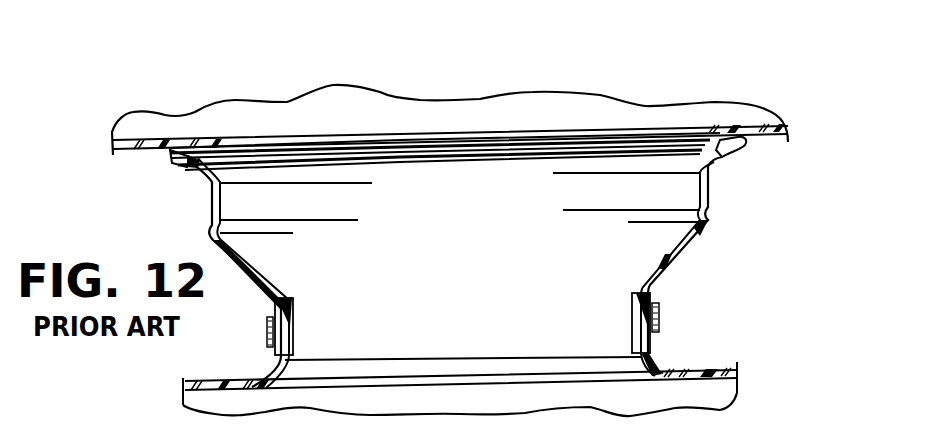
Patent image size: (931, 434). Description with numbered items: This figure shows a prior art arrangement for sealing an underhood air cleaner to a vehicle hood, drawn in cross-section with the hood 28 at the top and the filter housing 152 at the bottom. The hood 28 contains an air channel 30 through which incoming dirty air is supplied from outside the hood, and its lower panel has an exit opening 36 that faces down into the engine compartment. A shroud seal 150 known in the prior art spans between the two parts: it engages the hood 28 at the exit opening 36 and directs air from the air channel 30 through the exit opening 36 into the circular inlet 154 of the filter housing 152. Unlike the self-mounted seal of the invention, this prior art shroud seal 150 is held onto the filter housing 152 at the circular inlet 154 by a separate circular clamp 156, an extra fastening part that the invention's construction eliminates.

The hood 28 is at (447, 98).
The air channel 30 is at (398, 128).
The exit opening 36 is at (233, 140).
The shroud seal 150 is at (711, 210).
The filter housing 152 is at (693, 371).
The circular inlet 154 is at (632, 328).
The circular clamp 156 is at (660, 315).